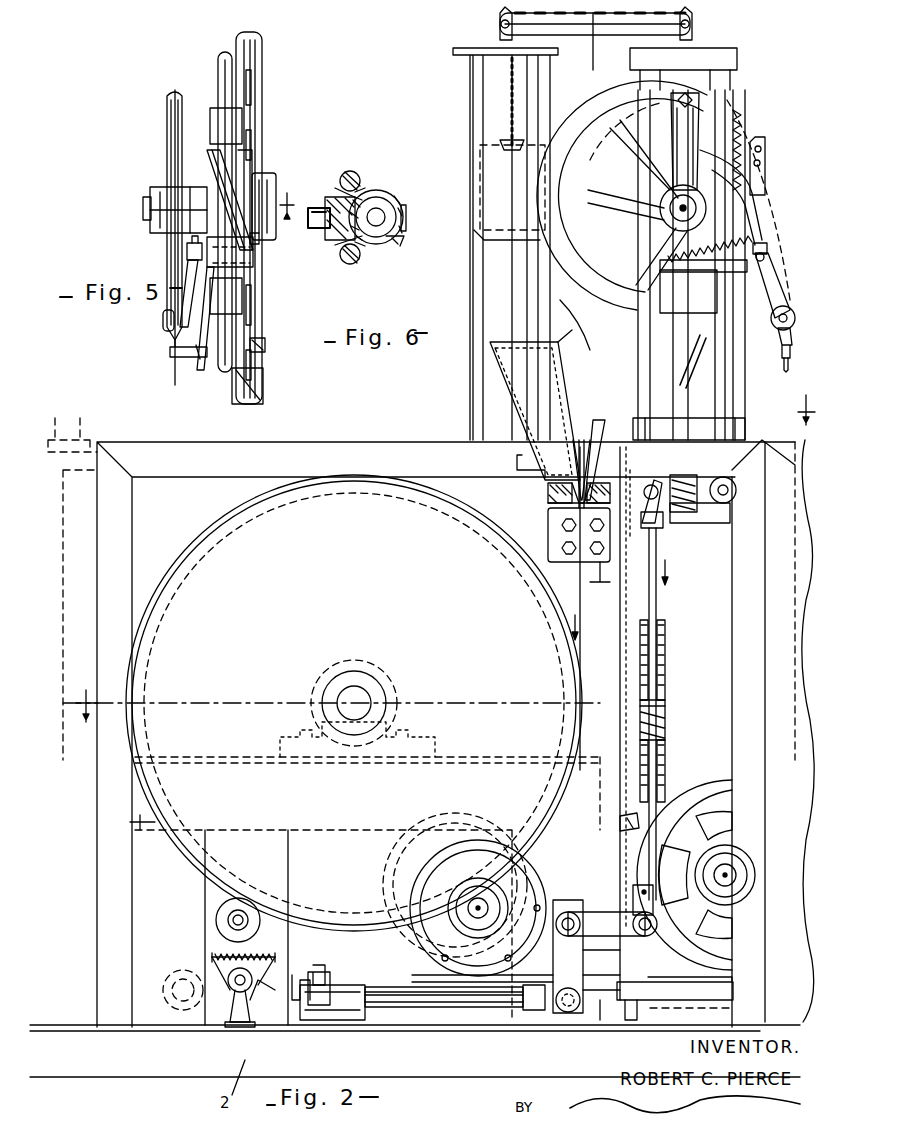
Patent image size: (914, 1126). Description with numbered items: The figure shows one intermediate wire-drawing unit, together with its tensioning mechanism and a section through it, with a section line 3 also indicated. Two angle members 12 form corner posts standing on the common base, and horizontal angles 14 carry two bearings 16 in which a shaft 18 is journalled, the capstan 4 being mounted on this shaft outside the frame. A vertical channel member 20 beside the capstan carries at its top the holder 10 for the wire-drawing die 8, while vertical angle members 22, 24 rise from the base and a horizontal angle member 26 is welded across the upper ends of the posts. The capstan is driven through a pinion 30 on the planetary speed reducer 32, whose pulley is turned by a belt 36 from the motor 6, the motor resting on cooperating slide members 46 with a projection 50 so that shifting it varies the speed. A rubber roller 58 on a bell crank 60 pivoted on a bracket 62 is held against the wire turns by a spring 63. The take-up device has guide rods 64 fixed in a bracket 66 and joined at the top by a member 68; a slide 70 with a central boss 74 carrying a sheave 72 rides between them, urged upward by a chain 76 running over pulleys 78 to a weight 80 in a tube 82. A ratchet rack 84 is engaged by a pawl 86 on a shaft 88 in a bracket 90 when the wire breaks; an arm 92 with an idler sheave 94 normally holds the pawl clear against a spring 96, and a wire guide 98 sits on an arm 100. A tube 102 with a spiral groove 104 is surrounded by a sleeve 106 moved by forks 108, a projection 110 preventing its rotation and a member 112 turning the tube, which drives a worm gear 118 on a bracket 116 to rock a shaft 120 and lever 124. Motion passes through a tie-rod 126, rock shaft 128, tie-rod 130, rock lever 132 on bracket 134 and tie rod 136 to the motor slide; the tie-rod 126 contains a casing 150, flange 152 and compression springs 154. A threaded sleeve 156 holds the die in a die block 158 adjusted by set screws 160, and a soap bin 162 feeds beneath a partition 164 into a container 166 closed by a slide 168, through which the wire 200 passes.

In FIG. 2, the section line 3 is at (441, 559).
In FIG. 2, the capstan 4 is at (800, 663).
In FIG. 5, the motor 6 is at (289, 201).
In FIG. 2, the motor 6 is at (702, 785).
In FIG. 2, the wire-drawing die 8 is at (592, 475).
In FIG. 2, the holder 10 is at (548, 532).
In FIG. 2, the angle members 12 is at (118, 542).
In FIG. 2, the horizontally arranged angles 14 is at (102, 643).
In FIG. 2, the bearings 16 is at (392, 690).
In FIG. 2, the shaft 18 is at (362, 690).
In FIG. 2, the vertical channel member 20 is at (612, 580).
In FIG. 2, the vertical angle member 22 is at (283, 935).
In FIG. 2, the vertical angle member 24 is at (620, 891).
In FIG. 2, the horizontal angle member 26 is at (385, 455).
In FIG. 2, the pinion 30 is at (474, 930).
In FIG. 2, the planetary speed reducer 32 is at (440, 932).
In FIG. 2, the belt 36 is at (625, 835).
In FIG. 2, the slide members 46 is at (720, 987).
In FIG. 2, the projection 50 is at (618, 1025).
In FIG. 2, the rubber roller 58 is at (216, 905).
In FIG. 2, the bell crank 60 is at (210, 948).
In FIG. 2, the bracket 62 is at (252, 1010).
In FIG. 2, the spring 63 is at (245, 968).
In FIG. 5, the cylindrical guide rods 64 is at (222, 66).
In FIG. 6, the cylindrical guide rods 64 is at (352, 171).
In FIG. 2, the cylindrical guide rods 64 is at (638, 372).
In FIG. 2, the bracket 66 is at (745, 425).
In FIG. 2, the member 68 is at (717, 52).
In FIG. 5, the slide 70 is at (214, 118).
In FIG. 6, the slide 70 is at (345, 260).
In FIG. 2, the slide 70 is at (700, 130).
In FIG. 5, the sheave 72 is at (167, 120).
In FIG. 2, the sheave 72 is at (600, 150).
In FIG. 5, the central boss 74 is at (212, 165).
In FIG. 6, the central boss 74 is at (333, 197).
In FIG. 2, the chain 76 is at (595, 47).
In FIG. 2, the pulleys 78 is at (500, 20).
In FIG. 2, the weight 80 is at (492, 172).
In FIG. 2, the tube 82 is at (483, 275).
In FIG. 5, the ratchet rack 84 is at (263, 380).
In FIG. 2, the ratchet rack 84 is at (735, 340).
In FIG. 5, the pawl 86 is at (256, 245).
In FIG. 2, the pawl 86 is at (765, 180).
In FIG. 5, the shaft 88 is at (185, 248).
In FIG. 2, the shaft 88 is at (767, 252).
In FIG. 5, the bracket 90 is at (198, 227).
In FIG. 2, the bracket 90 is at (742, 203).
In FIG. 5, the arm 92 is at (186, 280).
In FIG. 2, the arm 92 is at (770, 287).
In FIG. 5, the idler sheave 94 is at (167, 330).
In FIG. 2, the idler sheave 94 is at (792, 316).
In FIG. 2, the spring 96 is at (710, 251).
In FIG. 5, the wire guide 98 is at (175, 360).
In FIG. 2, the wire guide 98 is at (790, 365).
In FIG. 5, the arm 100 is at (202, 372).
In FIG. 2, the arm 100 is at (792, 340).
In FIG. 5, the tube 102 is at (262, 46).
In FIG. 6, the tube 102 is at (400, 240).
In FIG. 2, the tube 102 is at (673, 394).
In FIG. 5, the spiral groove 104 is at (265, 345).
In FIG. 2, the spiral groove 104 is at (688, 353).
In FIG. 5, the cylindrical sleeve 106 is at (268, 178).
In FIG. 6, the cylindrical sleeve 106 is at (393, 200).
In FIG. 5, the forks 108 is at (252, 160).
In FIG. 6, the forks 108 is at (368, 197).
In FIG. 6, the projection 110 is at (332, 230).
In FIG. 6, the member 112 is at (407, 210).
In FIG. 2, the bracket 116 is at (712, 512).
In FIG. 2, the worm gear 118 is at (682, 475).
In FIG. 2, the rock shaft 120 is at (729, 488).
In FIG. 2, the lever 124 is at (650, 480).
In FIG. 2, the tie-rod 126 is at (658, 596).
In FIG. 2, the rock shaft 128 is at (582, 924).
In FIG. 2, the tie-rod 130 is at (445, 1007).
In FIG. 2, the rock lever 132 is at (318, 1020).
In FIG. 2, the bracket 134 is at (306, 978).
In FIG. 2, the tie rod 136 is at (410, 1007).
In FIG. 2, the tubular casing 150 is at (665, 720).
In FIG. 2, the flange 152 is at (662, 700).
In FIG. 2, the compression springs 154 is at (660, 662).
In FIG. 2, the threaded sleeve 156 is at (548, 488).
In FIG. 2, the die block 158 is at (599, 581).
In FIG. 2, the set screws 160 is at (552, 503).
In FIG. 2, the bin 162 is at (533, 383).
In FIG. 2, the partition 164 is at (560, 335).
In FIG. 2, the container 166 is at (592, 430).
In FIG. 2, the slide 168 is at (517, 462).
In FIG. 2, the wire 200 is at (580, 630).